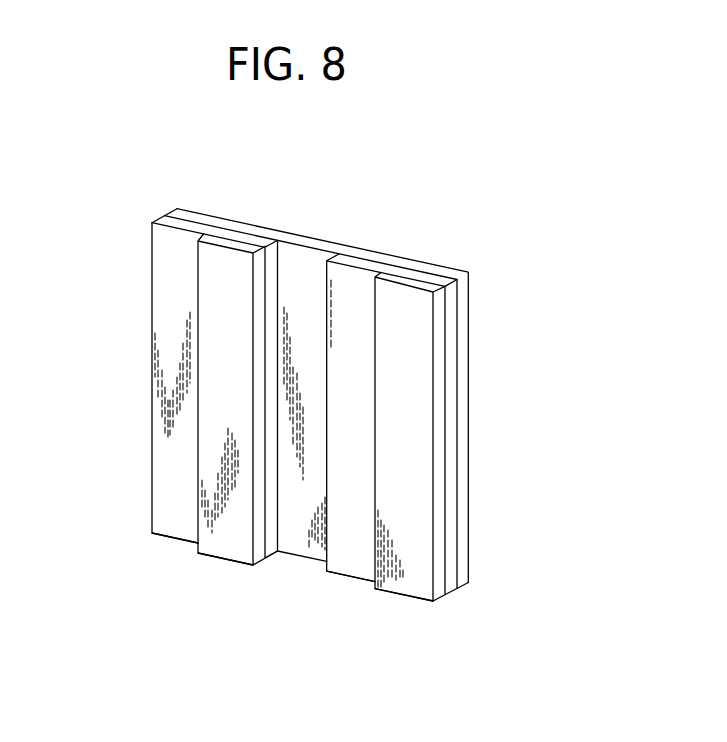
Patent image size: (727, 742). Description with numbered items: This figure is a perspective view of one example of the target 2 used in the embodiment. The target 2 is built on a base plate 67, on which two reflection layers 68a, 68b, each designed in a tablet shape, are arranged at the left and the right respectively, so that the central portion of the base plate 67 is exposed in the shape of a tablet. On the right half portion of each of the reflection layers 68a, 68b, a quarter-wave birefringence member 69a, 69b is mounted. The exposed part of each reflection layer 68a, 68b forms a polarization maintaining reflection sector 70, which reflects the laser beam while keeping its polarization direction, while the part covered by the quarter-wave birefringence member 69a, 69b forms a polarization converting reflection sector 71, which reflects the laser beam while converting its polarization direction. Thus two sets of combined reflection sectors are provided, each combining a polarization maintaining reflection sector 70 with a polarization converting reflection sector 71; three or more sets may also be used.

The target 2 is at (488, 362).
The base plate 67 is at (313, 240).
The reflection layer 68a is at (170, 282).
The reflection layer 68b is at (354, 280).
The λ/4 birefringence member 69a is at (217, 459).
The λ/4 birefringence member 69b is at (415, 470).
The polarization maintaining reflection sector 70 is at (193, 553).
The polarization converting reflection sector 71 is at (250, 572).